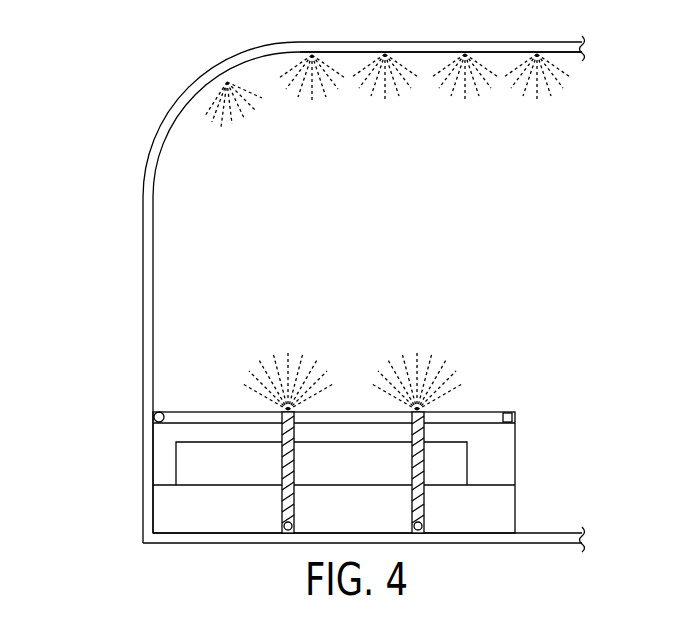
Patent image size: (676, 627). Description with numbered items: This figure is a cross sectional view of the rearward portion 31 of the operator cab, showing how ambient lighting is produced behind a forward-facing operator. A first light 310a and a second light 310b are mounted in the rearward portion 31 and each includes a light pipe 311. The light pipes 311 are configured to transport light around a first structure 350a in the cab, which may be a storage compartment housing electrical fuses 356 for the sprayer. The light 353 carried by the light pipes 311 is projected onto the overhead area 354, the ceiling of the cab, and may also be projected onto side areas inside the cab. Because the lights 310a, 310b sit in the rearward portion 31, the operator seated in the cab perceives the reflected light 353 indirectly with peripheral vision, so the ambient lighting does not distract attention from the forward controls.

The rearward portion 31 is at (138, 66).
The light 353 is at (289, 117).
The overhead area 354 is at (415, 52).
The electrical fuses 356 is at (215, 462).
The first structure 350a is at (518, 448).
The first light 310a is at (420, 532).
The second light 310b is at (285, 530).
The light pipe 311 is at (296, 497).